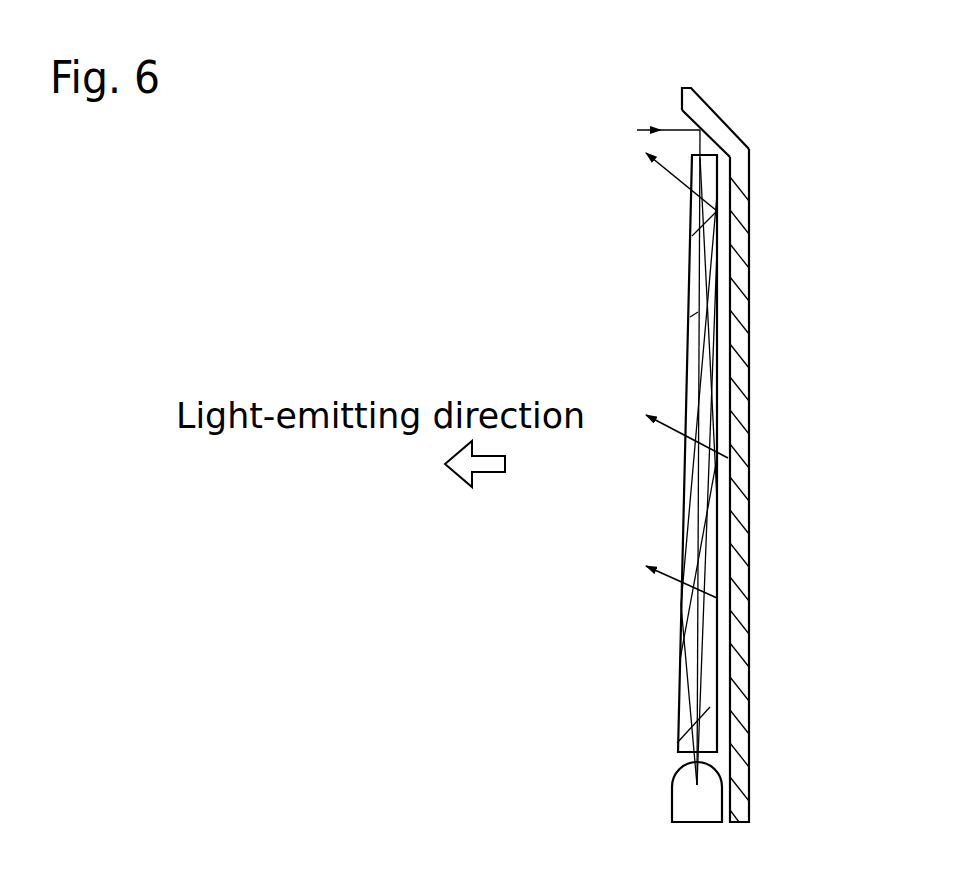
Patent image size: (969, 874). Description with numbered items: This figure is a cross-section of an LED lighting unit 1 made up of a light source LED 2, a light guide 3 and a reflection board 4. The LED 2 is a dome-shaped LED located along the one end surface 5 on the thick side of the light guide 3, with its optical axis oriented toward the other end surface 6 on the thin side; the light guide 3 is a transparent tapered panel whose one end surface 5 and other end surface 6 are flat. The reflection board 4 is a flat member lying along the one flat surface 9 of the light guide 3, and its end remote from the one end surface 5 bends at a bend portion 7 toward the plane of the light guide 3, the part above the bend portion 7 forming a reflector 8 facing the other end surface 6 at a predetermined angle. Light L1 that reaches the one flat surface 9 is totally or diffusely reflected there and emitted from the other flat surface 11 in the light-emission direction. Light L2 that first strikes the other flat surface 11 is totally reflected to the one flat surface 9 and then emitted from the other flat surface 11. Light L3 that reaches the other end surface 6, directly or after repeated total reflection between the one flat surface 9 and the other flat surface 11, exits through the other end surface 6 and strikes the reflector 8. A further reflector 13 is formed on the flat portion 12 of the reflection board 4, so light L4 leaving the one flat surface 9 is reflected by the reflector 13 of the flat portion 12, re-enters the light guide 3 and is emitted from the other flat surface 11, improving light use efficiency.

The LED lighting unit 1 is at (527, 176).
The LED 2 is at (680, 800).
The light guide 3 is at (716, 698).
The reflection board 4 is at (751, 340).
The one end surface 5 is at (683, 745).
The other end surface 6 is at (728, 166).
The bend portion 7 is at (722, 118).
The reflector 8 is at (693, 125).
The one flat surface 9 is at (718, 502).
The other flat surface 11 is at (681, 632).
The flat portion 12 is at (750, 538).
The reflector 13 is at (720, 626).
The light L1 is at (712, 307).
The light L2 is at (658, 575).
The light L3 is at (651, 132).
The light L4 is at (667, 170).